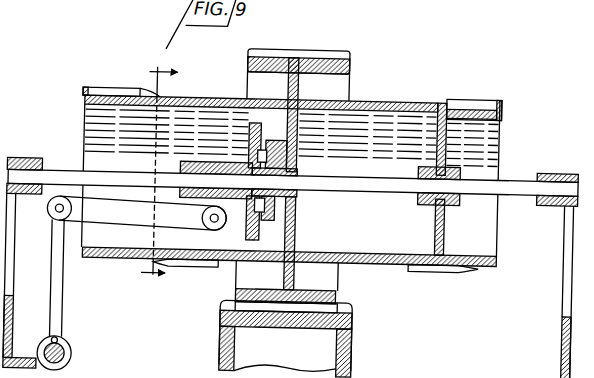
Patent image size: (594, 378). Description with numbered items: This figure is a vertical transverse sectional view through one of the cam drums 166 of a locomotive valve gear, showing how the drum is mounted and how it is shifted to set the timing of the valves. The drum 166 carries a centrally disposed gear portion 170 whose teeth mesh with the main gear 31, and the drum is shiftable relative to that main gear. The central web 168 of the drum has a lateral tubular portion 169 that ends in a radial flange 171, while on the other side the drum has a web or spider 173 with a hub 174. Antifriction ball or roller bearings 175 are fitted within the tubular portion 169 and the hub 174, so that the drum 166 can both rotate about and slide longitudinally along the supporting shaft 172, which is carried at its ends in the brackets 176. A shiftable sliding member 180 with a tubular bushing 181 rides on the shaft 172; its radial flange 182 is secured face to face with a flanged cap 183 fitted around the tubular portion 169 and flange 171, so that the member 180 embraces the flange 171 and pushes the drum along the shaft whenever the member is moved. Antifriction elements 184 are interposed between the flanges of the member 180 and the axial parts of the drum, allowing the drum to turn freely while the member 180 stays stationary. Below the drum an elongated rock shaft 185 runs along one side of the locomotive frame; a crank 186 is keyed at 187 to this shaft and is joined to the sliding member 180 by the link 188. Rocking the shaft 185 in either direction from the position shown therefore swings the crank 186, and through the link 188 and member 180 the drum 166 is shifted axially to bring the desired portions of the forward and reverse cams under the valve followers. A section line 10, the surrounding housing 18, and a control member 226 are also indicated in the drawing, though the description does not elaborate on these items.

The section line 10 is at (154, 173).
The housing 18 is at (593, 116).
The main gear 31 is at (350, 333).
The cam drum 166 is at (381, 101).
The central web 168 is at (298, 127).
The lateral tubular portion 169 is at (297, 230).
The gear portion 170 is at (340, 294).
The radial flange 171 is at (245, 153).
The supporting shaft 172 is at (358, 167).
The web or spider 173 is at (472, 144).
The hub 174 is at (448, 158).
The antifriction bearings 175 is at (433, 165).
The brackets 176 is at (13, 166).
The shiftable sliding member 180 is at (199, 158).
The tubular bushing 181 is at (182, 165).
The radial flange 182 is at (243, 128).
The flanged cap 183 is at (284, 113).
The antifriction elements 184 is at (247, 215).
The rock shaft 185 is at (75, 363).
The crank 186 is at (65, 292).
The key 187 is at (62, 343).
The link 188 is at (130, 222).
The control member 226 is at (18, 6).